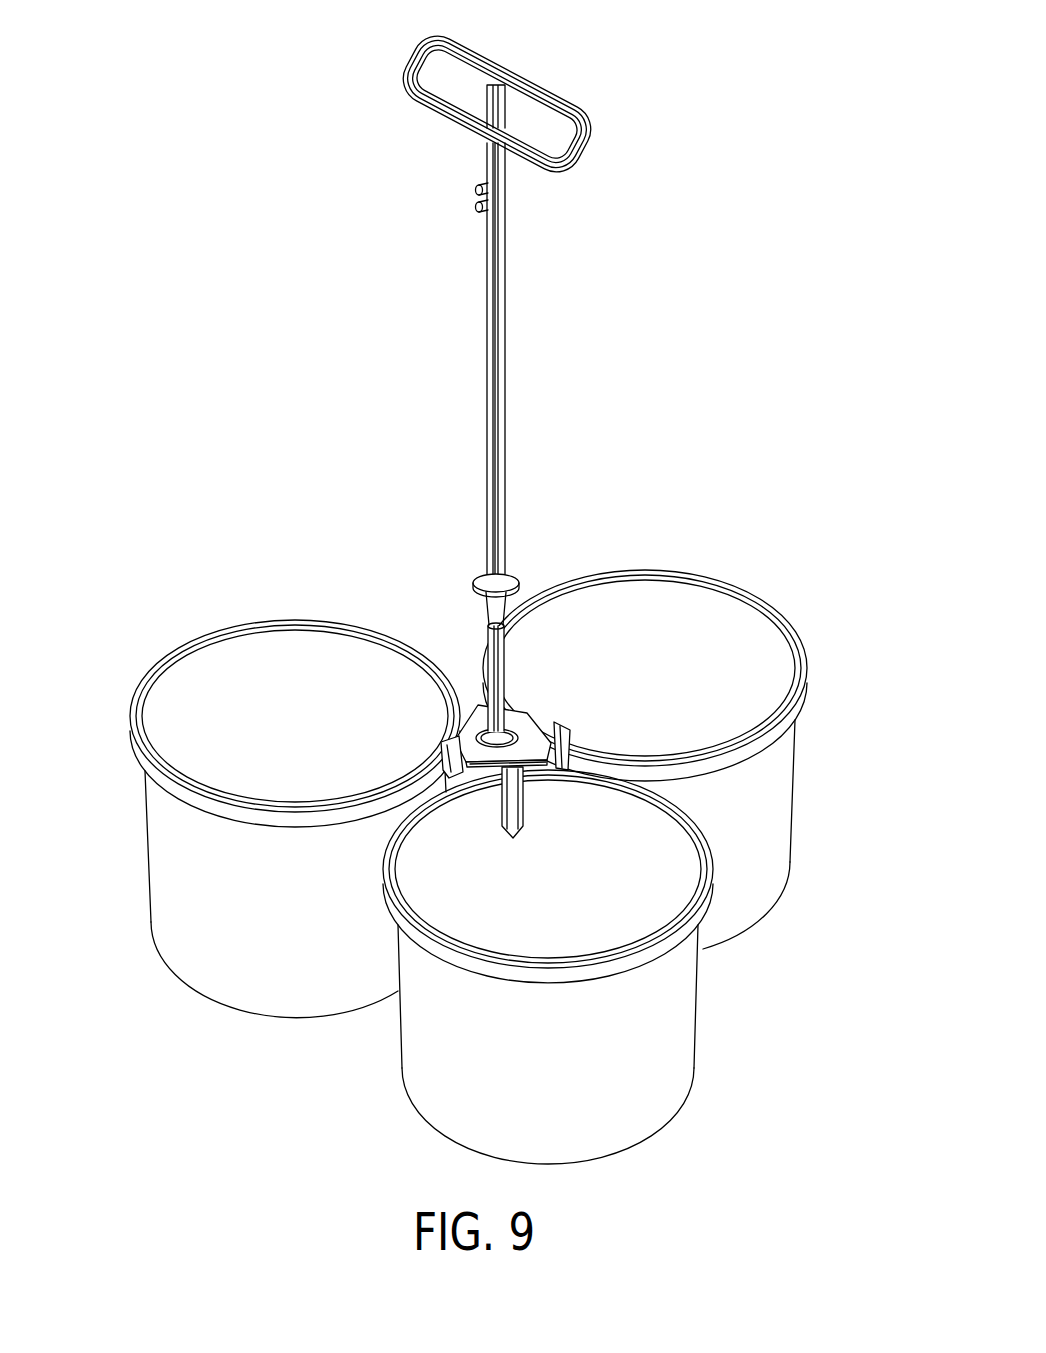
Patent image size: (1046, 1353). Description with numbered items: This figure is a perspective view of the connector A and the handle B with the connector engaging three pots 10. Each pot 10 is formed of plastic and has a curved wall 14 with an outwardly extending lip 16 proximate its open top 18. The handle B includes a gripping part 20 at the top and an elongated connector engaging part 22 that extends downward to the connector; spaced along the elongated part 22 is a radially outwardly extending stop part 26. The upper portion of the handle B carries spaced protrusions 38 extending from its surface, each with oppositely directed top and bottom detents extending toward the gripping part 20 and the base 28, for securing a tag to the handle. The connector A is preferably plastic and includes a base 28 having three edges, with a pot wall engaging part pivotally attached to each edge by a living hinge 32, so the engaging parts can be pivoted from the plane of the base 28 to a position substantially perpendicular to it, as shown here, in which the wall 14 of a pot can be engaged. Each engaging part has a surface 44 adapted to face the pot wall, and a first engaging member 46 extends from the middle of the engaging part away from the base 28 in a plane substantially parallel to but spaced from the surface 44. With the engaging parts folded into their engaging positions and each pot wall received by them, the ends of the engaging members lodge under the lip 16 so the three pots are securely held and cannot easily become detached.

The pot 10 is at (479, 867).
The curved wall 14 is at (267, 920).
The lip 16 is at (797, 708).
The open top 18 is at (280, 720).
The gripping part 20 is at (552, 96).
The elongated connector engaging part 22 is at (426, 408).
The stop part 26 is at (517, 582).
The base 28 is at (376, 863).
The living hinge 32 is at (456, 779).
The protrusions 38 is at (478, 191).
The surface 44 is at (459, 772).
The first engaging member 46 is at (512, 808).
The connector A is at (468, 694).
The handle B is at (522, 408).